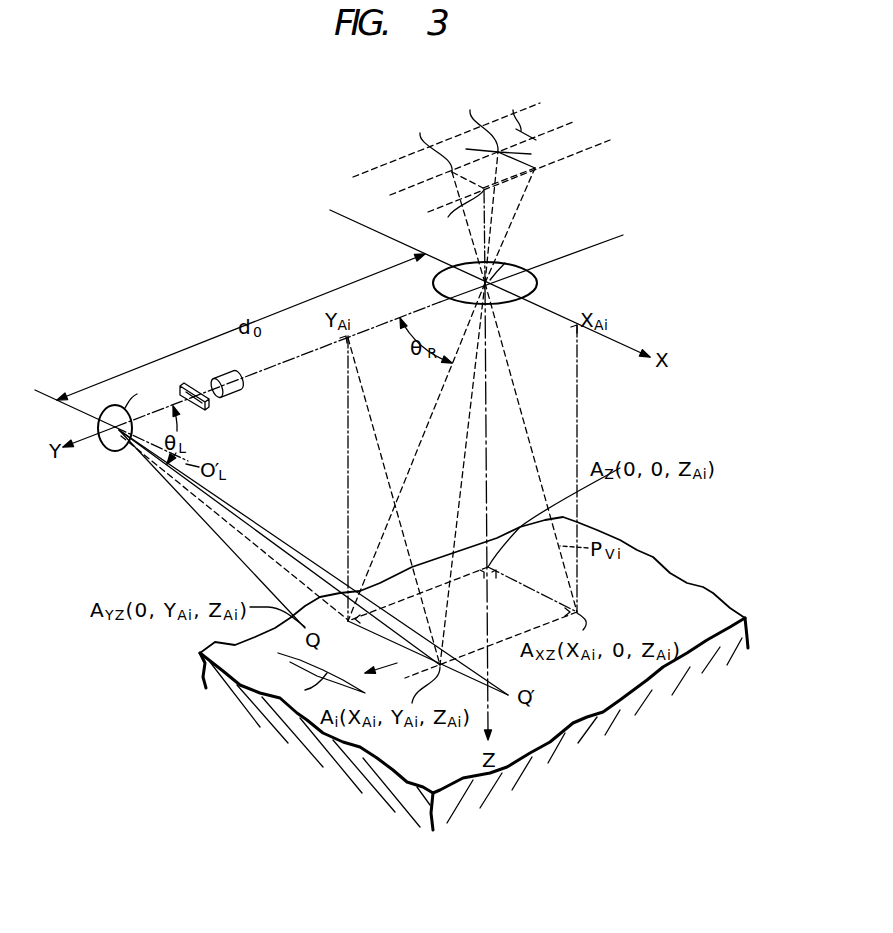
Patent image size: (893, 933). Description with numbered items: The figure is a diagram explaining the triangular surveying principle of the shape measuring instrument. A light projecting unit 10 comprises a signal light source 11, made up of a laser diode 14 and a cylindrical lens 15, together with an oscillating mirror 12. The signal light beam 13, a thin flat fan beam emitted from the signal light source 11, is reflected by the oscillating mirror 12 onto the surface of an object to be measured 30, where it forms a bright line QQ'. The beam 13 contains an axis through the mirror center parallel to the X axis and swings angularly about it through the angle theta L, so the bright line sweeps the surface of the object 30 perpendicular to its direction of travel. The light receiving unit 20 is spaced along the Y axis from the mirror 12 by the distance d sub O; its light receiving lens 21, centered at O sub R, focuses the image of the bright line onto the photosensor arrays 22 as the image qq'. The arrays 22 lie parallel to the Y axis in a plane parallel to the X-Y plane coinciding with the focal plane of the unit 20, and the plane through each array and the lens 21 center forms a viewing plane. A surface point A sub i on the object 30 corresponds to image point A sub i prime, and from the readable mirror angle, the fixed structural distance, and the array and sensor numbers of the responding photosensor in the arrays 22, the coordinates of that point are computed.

The light projecting unit 10 is at (91, 362).
The signal light source 11 is at (242, 362).
The oscillating mirror 12 is at (113, 451).
The signal light beam 13 is at (293, 543).
The laser diode 14 is at (234, 393).
The cylindrical lens 15 is at (212, 408).
The light receiving unit 20 is at (621, 222).
The light receiving lens 21 is at (537, 283).
The photosensor arrays 22 is at (643, 132).
The object to be measured 30 is at (700, 610).